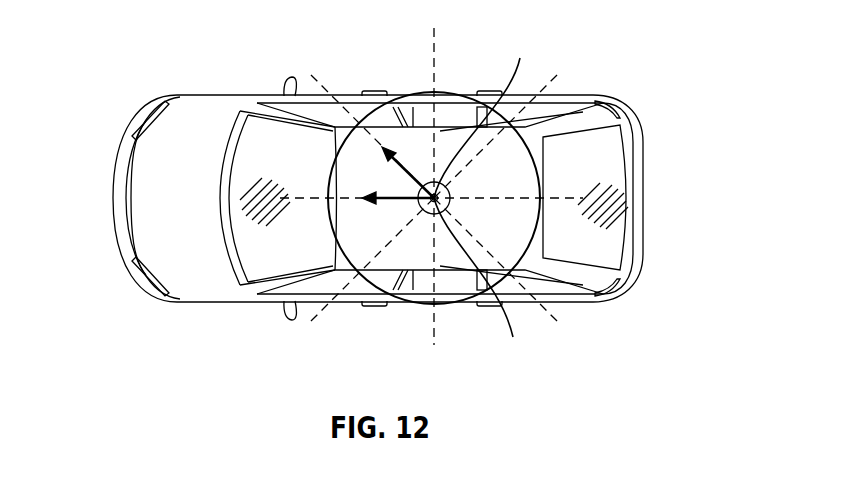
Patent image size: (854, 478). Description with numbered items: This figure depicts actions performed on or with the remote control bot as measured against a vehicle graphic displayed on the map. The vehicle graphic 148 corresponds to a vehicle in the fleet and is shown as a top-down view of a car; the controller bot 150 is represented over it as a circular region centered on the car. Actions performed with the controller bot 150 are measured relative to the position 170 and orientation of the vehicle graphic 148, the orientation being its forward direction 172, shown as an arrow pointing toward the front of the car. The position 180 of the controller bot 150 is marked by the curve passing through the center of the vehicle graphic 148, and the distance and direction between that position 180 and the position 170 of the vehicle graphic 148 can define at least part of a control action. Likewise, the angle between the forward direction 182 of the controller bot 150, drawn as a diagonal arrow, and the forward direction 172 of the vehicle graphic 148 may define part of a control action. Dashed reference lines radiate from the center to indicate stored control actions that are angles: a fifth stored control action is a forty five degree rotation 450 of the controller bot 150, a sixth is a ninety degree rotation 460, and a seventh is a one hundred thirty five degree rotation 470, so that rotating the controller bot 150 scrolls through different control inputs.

The vehicle graphic 148 is at (570, 304).
The controller bot 150 is at (331, 162).
The position of the vehicle graphic 170 is at (489, 285).
The forward direction of the vehicle graphic 172 is at (393, 201).
The position of the controller bot 180 is at (491, 111).
The forward direction of the controller bot 182 is at (407, 165).
The forty five degree rotation 450 is at (302, 68).
The ninety degree rotation 460 is at (434, 28).
The one hundred thirty five degree rotation 470 is at (566, 68).